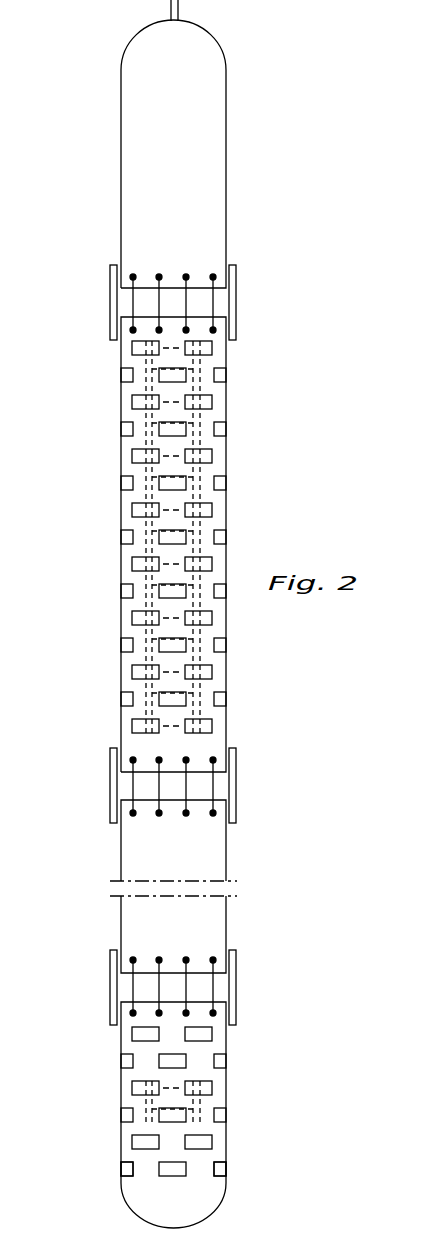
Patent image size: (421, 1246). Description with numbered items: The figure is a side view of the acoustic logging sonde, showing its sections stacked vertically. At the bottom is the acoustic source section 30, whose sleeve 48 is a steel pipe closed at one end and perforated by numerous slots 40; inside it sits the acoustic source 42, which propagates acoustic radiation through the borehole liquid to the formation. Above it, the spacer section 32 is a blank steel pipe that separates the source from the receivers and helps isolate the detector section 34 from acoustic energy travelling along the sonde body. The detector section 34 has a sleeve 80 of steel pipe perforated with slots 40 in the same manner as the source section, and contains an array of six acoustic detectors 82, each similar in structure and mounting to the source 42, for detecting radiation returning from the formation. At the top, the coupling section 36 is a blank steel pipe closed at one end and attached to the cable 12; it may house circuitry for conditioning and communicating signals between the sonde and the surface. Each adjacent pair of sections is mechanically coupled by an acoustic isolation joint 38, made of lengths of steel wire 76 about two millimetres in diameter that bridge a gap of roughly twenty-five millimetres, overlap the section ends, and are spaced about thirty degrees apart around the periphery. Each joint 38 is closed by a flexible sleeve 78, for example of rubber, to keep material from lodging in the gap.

The cable 12 is at (179, 7).
The coupling section 36 is at (140, 87).
The acoustic isolation joint 38 is at (150, 299).
The acoustic detector section 34 is at (118, 412).
The slots 40 is at (160, 537).
The sleeve 80 is at (198, 532).
The acoustic detector 82 is at (208, 635).
The spacer section 32 is at (141, 862).
The steel wire 76 is at (186, 996).
The flexible sleeve 78 is at (236, 987).
The acoustic source section 30 is at (120, 1044).
The acoustic source 42 is at (204, 1106).
The sleeve 48 is at (133, 1157).